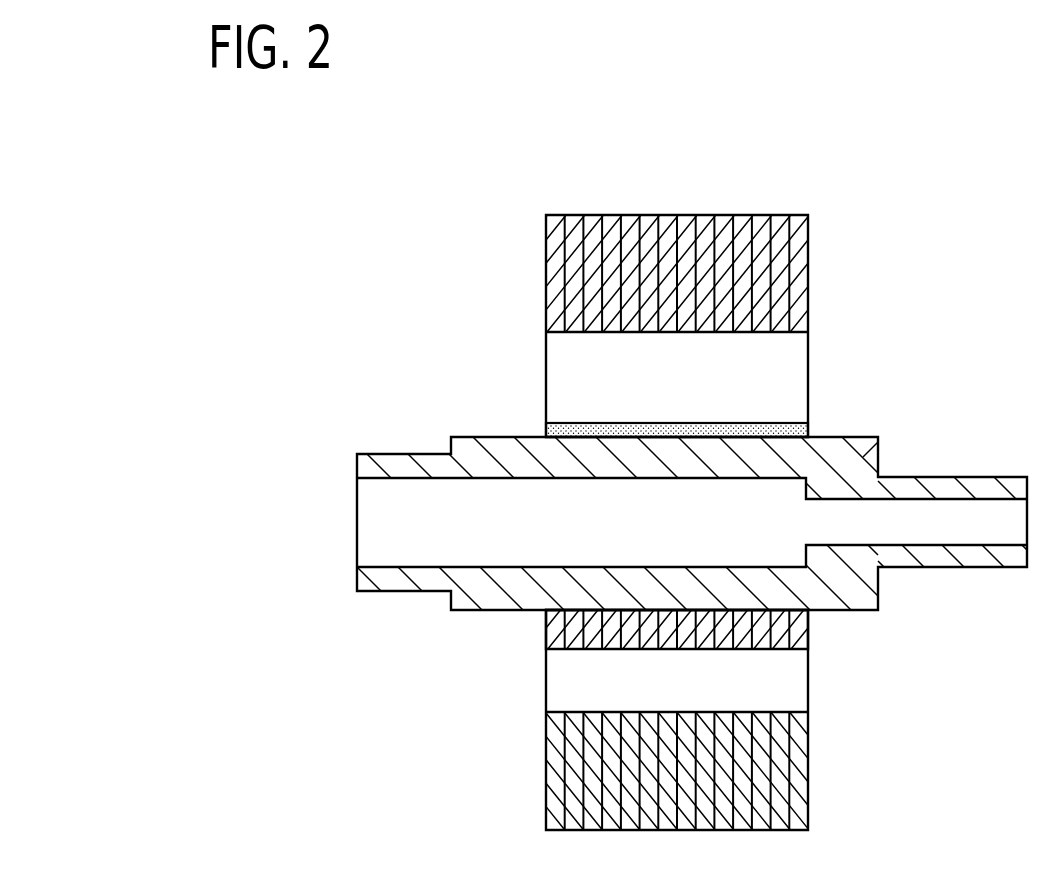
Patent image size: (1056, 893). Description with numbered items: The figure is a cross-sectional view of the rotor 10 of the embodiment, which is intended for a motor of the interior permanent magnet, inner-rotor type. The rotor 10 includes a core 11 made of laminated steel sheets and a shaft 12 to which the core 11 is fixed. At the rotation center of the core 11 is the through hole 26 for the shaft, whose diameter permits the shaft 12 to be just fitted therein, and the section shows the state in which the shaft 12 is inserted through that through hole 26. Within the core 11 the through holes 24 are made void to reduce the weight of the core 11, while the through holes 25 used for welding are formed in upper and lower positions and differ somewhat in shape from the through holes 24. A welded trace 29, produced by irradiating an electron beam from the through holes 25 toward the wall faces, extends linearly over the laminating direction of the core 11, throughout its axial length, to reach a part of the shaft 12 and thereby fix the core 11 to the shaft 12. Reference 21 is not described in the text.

The rotor 10 is at (802, 180).
The core 11 is at (810, 266).
The shaft 12 is at (878, 437).
The coil 21 is at (655, 215).
The through holes 24 is at (785, 649).
The through holes used for welding 25 is at (590, 332).
The through hole for shaft 26 is at (780, 603).
The welded trace 29 is at (808, 427).